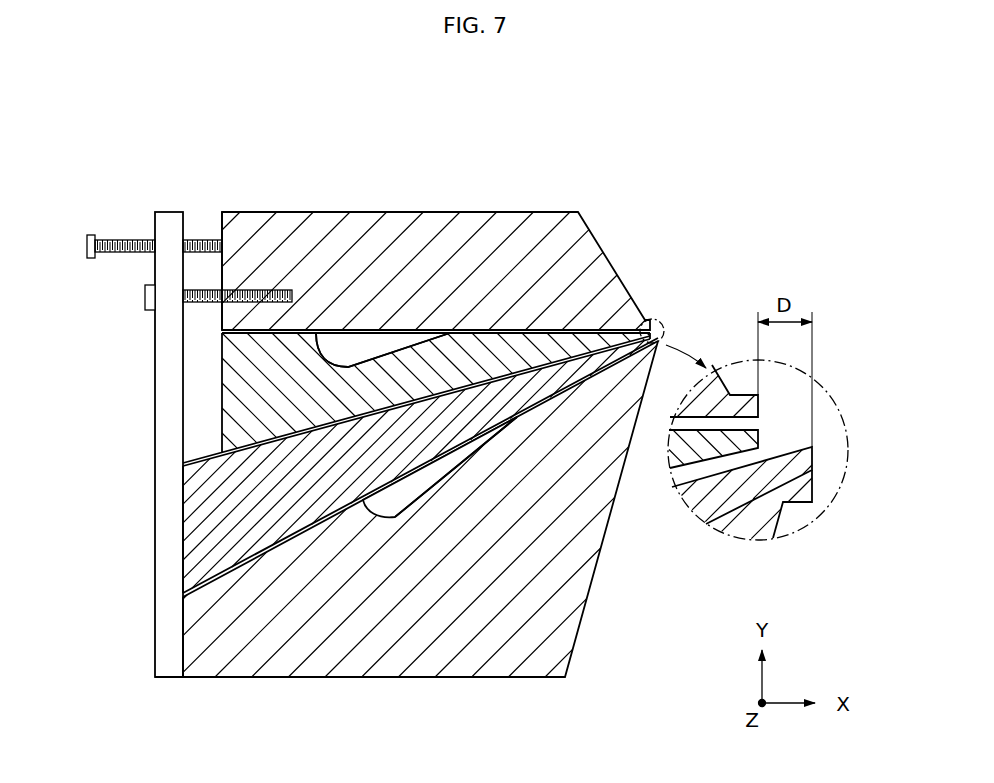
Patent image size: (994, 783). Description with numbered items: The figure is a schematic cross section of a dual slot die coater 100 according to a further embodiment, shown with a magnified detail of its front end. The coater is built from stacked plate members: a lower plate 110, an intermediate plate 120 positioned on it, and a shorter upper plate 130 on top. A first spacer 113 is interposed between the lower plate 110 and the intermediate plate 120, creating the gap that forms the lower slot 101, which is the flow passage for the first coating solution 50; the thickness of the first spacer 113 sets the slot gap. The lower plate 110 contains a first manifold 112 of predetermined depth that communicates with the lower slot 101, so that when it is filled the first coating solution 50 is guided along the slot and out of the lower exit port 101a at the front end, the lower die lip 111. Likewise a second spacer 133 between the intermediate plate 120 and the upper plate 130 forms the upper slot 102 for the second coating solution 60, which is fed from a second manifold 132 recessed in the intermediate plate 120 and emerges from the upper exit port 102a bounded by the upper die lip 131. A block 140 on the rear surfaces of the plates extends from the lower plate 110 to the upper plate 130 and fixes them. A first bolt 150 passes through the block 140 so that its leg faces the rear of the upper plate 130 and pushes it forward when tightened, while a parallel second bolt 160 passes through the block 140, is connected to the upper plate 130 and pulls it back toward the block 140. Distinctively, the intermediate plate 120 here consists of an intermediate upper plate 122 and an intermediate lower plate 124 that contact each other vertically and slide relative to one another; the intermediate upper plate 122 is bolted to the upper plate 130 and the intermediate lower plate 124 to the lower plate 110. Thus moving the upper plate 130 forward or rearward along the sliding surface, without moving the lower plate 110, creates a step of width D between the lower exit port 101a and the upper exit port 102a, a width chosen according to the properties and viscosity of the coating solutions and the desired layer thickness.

The dual slot die coater 100 is at (229, 140).
The block 140 is at (172, 212).
The upper plate 130 is at (540, 212).
The second spacer 133 is at (263, 333).
The second manifold 132 is at (372, 364).
The second coating solution 60 is at (348, 347).
The upper slot 102 is at (415, 330).
The intermediate plate 120 is at (100, 525).
The intermediate upper plate 122 is at (240, 380).
The intermediate lower plate 124 is at (195, 518).
The lower plate 110 is at (306, 678).
The first coating solution 50 is at (400, 503).
The first manifold 112 is at (420, 510).
The lower slot 101 is at (520, 415).
The first spacer 113 is at (228, 575).
The first bolt 150 is at (87, 247).
The second bolt 160 is at (145, 298).
The upper die lip 131 is at (743, 398).
The upper exit port 102a is at (763, 423).
The lower exit port 101a is at (816, 472).
The lower die lip 111 is at (806, 490).